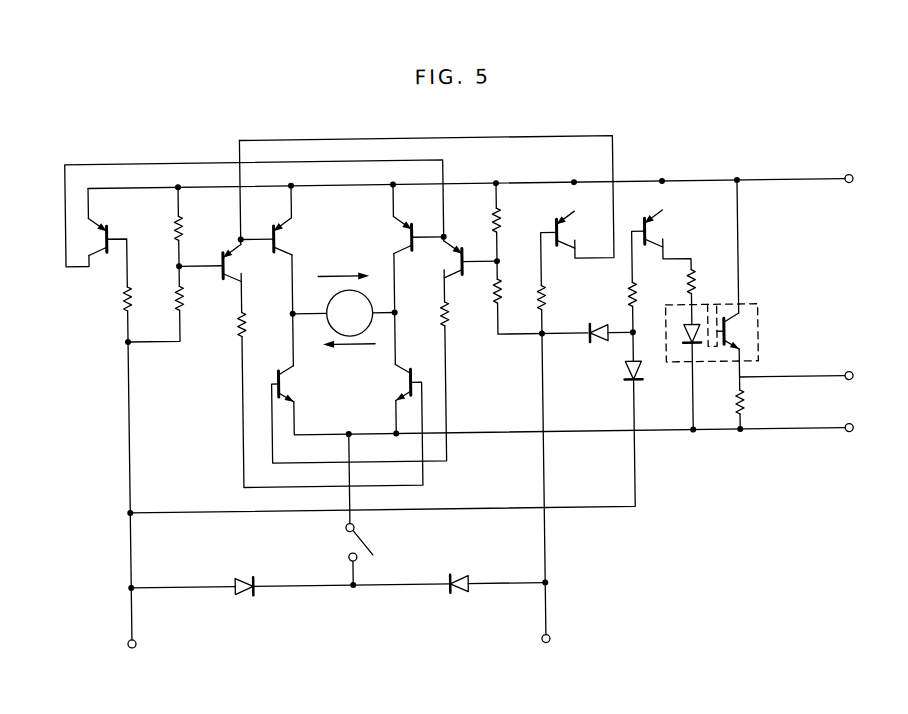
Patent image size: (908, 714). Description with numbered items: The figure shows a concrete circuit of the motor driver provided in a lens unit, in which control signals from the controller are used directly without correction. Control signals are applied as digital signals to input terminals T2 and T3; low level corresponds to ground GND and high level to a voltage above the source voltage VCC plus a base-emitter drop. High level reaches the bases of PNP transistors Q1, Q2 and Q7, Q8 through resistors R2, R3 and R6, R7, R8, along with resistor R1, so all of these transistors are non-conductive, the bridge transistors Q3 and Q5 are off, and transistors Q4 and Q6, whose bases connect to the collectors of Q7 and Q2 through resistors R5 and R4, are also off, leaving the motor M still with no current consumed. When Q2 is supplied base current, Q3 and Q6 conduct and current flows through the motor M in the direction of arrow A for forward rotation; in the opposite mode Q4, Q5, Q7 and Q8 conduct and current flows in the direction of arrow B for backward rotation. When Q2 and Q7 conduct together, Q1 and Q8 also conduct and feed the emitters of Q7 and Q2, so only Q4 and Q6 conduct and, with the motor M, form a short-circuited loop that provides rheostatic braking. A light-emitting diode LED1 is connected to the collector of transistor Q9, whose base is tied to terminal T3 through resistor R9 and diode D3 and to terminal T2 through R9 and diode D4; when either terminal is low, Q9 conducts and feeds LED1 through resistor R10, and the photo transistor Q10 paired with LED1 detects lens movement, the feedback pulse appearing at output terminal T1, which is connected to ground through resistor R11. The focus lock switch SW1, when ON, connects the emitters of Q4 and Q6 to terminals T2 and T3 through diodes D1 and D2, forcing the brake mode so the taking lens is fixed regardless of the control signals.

The PNP transistor Q1 is at (107, 227).
The PNP transistor Q2 is at (247, 263).
The PNP transistor Q3 is at (297, 236).
The transistor Q4 is at (301, 383).
The PNP transistor Q5 is at (385, 235).
The transistor Q6 is at (388, 382).
The PNP transistor Q7 is at (438, 261).
The PNP transistor Q8 is at (579, 230).
The transistor Q9 is at (667, 229).
The photo transistor Q10 is at (742, 336).
The resistor R1 is at (114, 300).
The resistor R2 is at (192, 228).
The resistor R3 is at (164, 299).
The resistor R4 is at (258, 326).
The resistor R5 is at (429, 316).
The resistor R6 is at (481, 223).
The resistor R7 is at (482, 294).
The resistor R8 is at (556, 297).
The resistor R9 is at (616, 295).
The resistor R10 is at (671, 282).
The resistor R11 is at (763, 402).
The diode D1 is at (242, 572).
The diode D2 is at (462, 569).
The diode D3 is at (597, 346).
The diode D4 is at (649, 377).
The light-emitting diode LED1 is at (697, 327).
The focus lock switch SW1 is at (381, 509).
The motor M is at (349, 313).
The arrow A is at (343, 267).
The arrow B is at (349, 353).
The source voltage VCC is at (874, 179).
The ground GND is at (876, 428).
The output terminal T1 is at (866, 375).
The input terminal T2 is at (136, 659).
The input terminal T3 is at (547, 653).